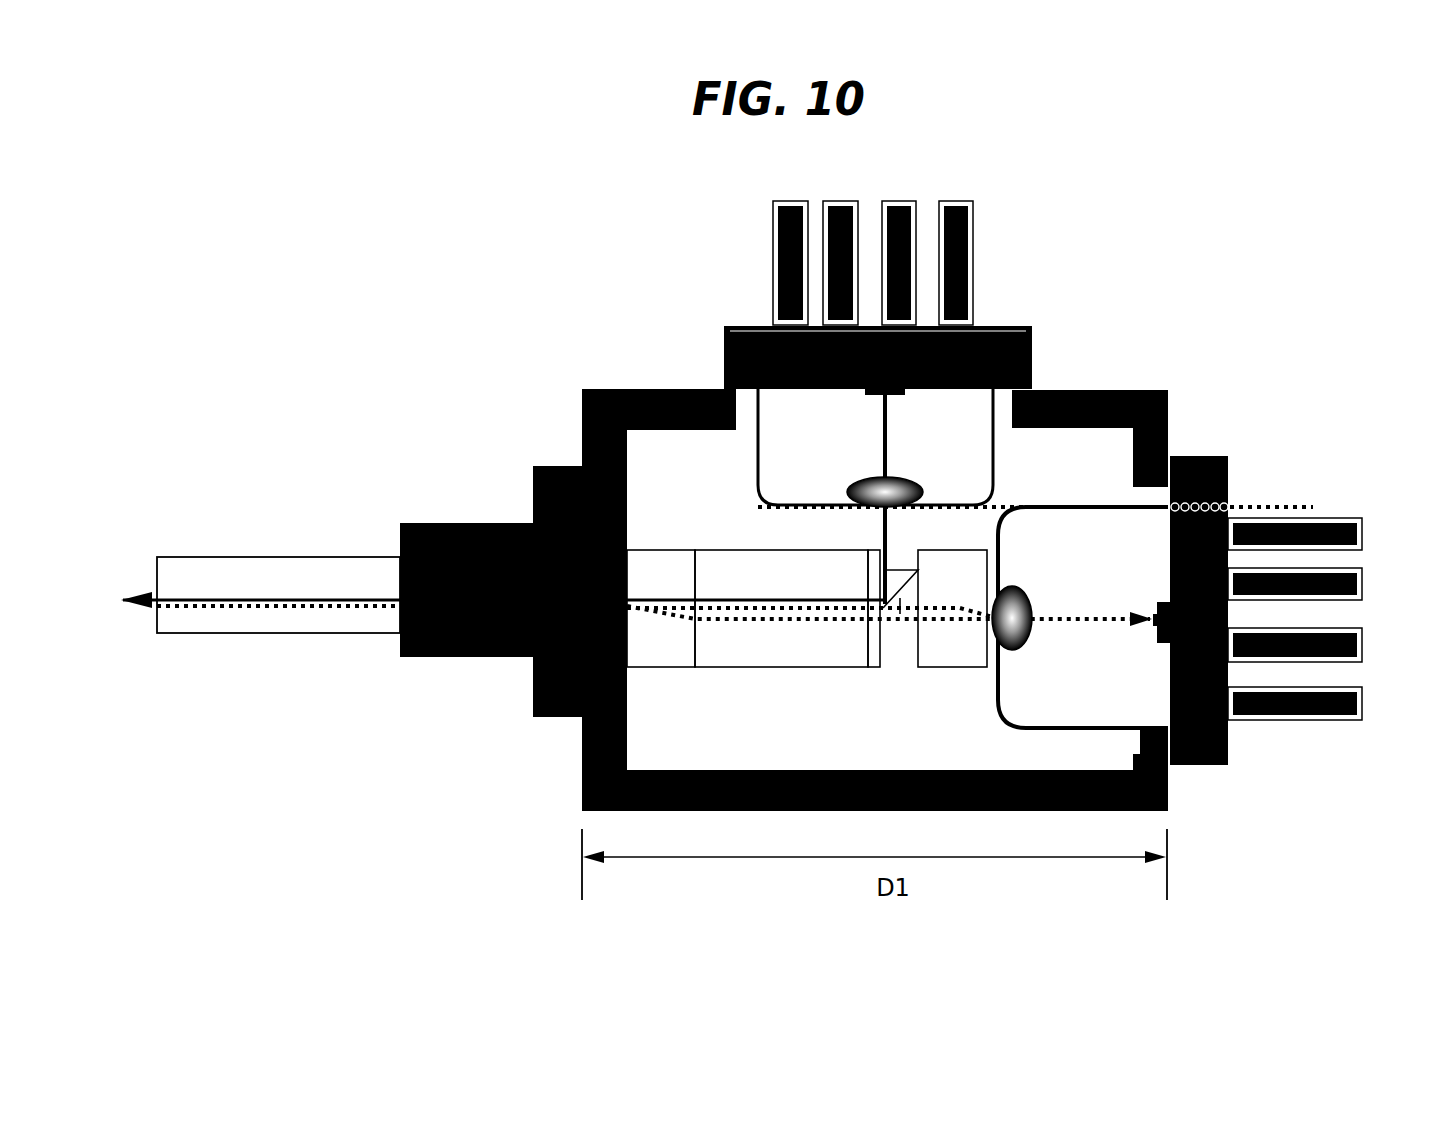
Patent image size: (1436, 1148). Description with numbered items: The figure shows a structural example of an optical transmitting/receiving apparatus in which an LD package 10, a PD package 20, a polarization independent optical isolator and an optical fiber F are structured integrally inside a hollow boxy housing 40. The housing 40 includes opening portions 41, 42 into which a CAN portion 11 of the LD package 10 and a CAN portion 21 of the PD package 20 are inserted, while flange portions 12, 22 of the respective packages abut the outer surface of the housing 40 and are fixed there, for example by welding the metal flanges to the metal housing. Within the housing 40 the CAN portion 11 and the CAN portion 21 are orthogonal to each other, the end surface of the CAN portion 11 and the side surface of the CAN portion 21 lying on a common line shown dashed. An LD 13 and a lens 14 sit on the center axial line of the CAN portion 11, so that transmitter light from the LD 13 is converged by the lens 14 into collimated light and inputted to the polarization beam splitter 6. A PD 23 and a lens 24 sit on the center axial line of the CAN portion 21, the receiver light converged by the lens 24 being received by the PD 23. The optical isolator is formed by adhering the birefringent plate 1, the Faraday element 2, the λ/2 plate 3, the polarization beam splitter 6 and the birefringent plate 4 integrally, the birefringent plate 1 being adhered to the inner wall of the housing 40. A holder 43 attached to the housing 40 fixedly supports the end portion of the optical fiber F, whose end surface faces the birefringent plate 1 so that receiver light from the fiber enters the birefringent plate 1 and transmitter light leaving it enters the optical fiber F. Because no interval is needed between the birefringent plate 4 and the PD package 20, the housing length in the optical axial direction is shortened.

The optical fiber F is at (278, 549).
The birefringent plate 1 is at (661, 636).
The Faraday element 2 is at (781, 639).
The λ/2 plate 3 is at (857, 644).
The polarization beam splitter 6 is at (900, 647).
The birefringent plate 4 is at (952, 651).
The LD package 10 is at (915, 340).
The CAN portion 11 is at (832, 447).
The flange portion 12 is at (829, 263).
The LD 13 is at (852, 498).
The lens 14 is at (903, 464).
The PD package 20 is at (1212, 572).
The CAN portion 21 is at (1083, 581).
The flange portion 22 is at (1284, 702).
The PD 23 is at (1129, 601).
The lens 24 is at (1029, 590).
The housing 40 is at (875, 561).
The opening portion 41 is at (1087, 441).
The opening portion 42 is at (1152, 735).
The holder 43 is at (491, 584).